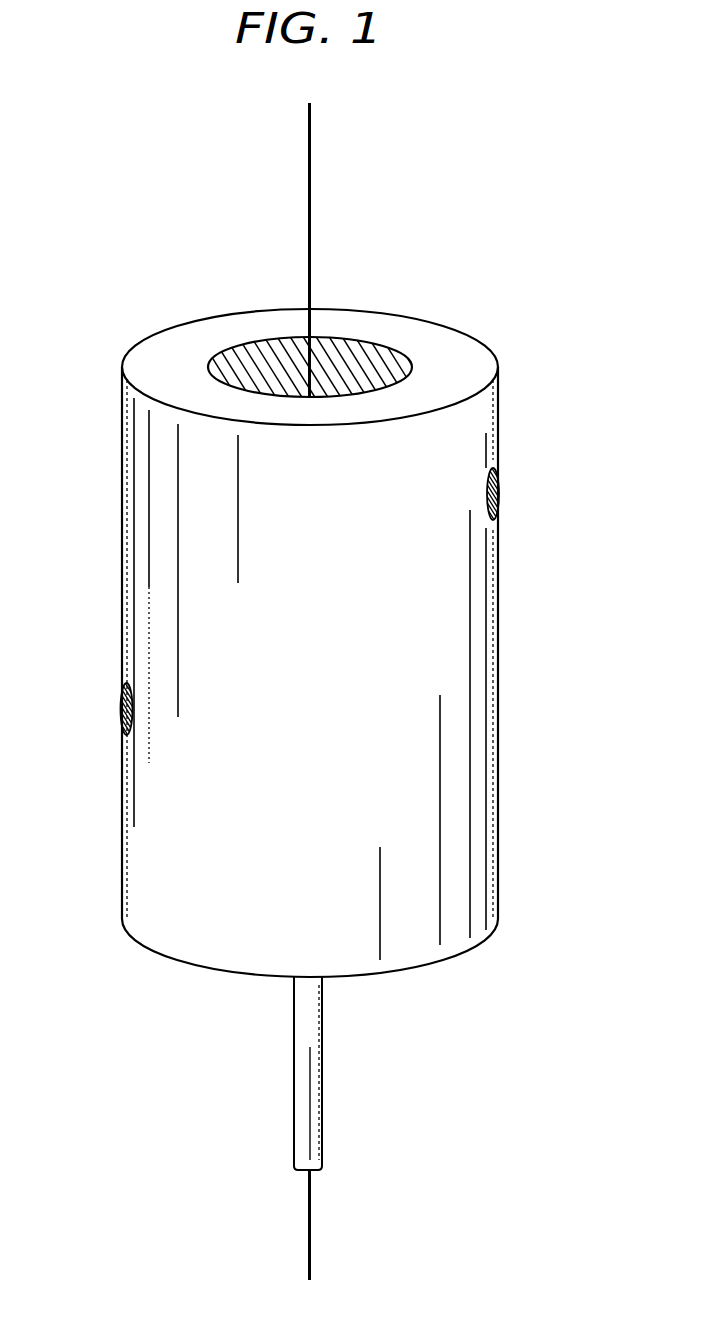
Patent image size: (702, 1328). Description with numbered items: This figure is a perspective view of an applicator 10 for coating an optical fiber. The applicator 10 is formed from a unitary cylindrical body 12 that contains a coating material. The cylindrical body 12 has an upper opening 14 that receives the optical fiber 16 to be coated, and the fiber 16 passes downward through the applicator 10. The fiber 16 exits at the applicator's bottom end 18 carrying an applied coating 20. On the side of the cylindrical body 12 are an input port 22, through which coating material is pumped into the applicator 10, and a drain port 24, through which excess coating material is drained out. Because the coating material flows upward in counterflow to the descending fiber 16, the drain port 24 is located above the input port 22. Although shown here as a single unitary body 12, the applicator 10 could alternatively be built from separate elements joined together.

The applicator 10 is at (472, 157).
The cylindrical body 12 is at (499, 712).
The upper opening 14 is at (388, 346).
The optical fiber 16 is at (311, 210).
The bottom end 18 is at (466, 966).
The applied coating 20 is at (294, 1102).
The input port 22 is at (121, 712).
The drain port 24 is at (500, 492).